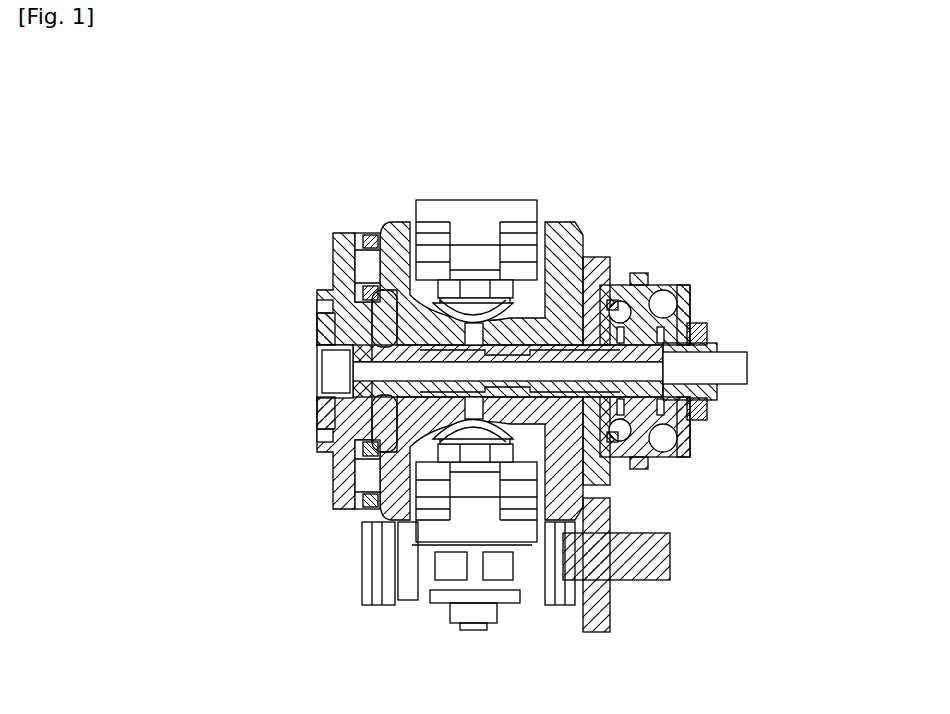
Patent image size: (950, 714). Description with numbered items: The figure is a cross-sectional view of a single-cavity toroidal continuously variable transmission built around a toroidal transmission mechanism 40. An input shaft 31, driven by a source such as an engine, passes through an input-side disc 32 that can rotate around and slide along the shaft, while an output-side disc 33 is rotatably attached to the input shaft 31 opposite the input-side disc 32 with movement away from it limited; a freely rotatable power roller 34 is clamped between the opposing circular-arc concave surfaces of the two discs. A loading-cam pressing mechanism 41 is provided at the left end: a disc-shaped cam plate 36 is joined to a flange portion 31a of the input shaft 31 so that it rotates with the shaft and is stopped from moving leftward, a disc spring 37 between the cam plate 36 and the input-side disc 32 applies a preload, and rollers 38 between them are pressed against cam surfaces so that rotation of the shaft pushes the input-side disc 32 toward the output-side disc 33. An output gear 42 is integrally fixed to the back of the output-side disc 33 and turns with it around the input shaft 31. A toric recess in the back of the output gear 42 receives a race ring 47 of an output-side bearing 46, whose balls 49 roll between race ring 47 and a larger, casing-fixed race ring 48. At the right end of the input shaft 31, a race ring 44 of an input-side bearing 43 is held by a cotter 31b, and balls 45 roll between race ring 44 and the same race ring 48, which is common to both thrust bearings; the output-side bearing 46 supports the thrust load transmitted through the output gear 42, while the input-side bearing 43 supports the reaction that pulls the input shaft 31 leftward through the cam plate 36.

The input shaft 31 is at (748, 364).
The flange portion 31a is at (318, 422).
The cotter 31b is at (717, 393).
The input-side disc 32 is at (393, 290).
The output-side disc 33 is at (563, 222).
The power roller 34 is at (478, 302).
The cam plate 36 is at (348, 233).
The disc spring 37 is at (317, 332).
The rollers 38 is at (370, 235).
The toroidal transmission mechanism 40 is at (592, 215).
The pressing mechanism 41 is at (322, 234).
The output gear 42 is at (600, 262).
The input-side bearing 43 is at (692, 287).
The race ring 44 is at (690, 307).
The balls 45 is at (680, 458).
The output-side bearing 46 is at (626, 302).
The race ring 47 is at (613, 458).
The race ring 48 is at (647, 457).
The balls 49 is at (683, 428).